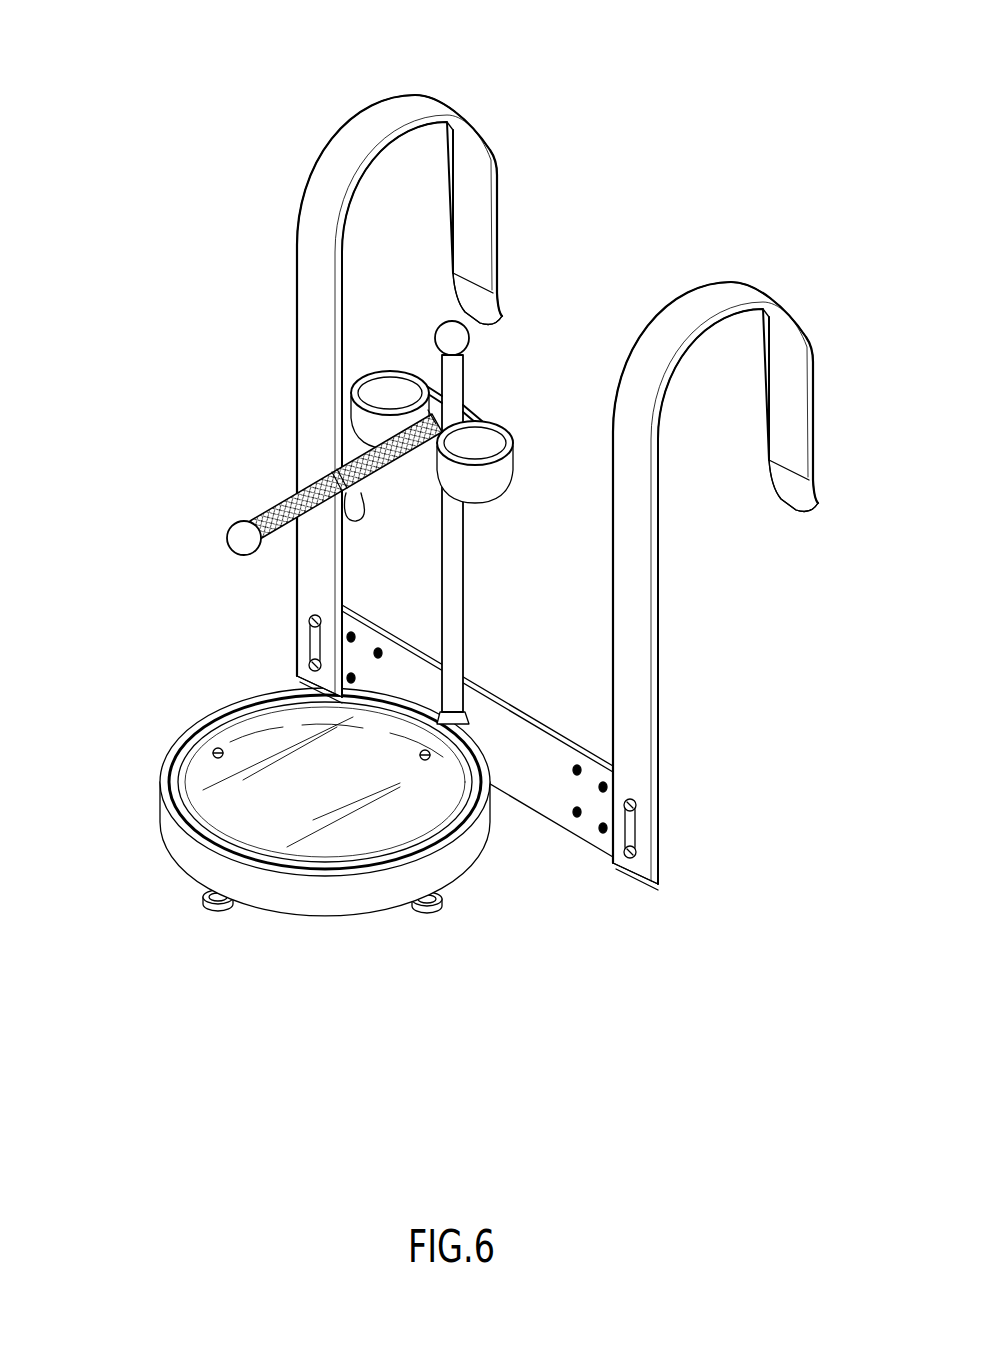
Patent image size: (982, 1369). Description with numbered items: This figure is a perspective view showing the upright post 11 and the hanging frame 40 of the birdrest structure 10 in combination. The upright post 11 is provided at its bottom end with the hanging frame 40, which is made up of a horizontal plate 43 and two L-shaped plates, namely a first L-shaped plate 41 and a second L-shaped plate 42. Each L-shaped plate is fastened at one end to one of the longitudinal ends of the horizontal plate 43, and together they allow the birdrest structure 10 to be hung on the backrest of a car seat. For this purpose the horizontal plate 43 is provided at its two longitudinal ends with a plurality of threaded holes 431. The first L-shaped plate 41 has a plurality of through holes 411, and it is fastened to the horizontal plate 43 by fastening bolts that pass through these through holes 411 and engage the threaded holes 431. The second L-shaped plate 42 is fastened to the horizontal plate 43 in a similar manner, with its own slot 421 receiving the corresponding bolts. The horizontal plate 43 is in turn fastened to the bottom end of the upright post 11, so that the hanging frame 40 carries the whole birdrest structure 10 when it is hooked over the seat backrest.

The birdrest structure 10 is at (163, 610).
The upright post 11 is at (453, 566).
The hanging frame 40 is at (597, 203).
The first L-shaped plate 41 is at (397, 110).
The through holes 411 is at (313, 645).
The second L-shaped plate 42 is at (737, 293).
The slot of second hook 421 is at (633, 832).
The horizontal plate 43 is at (520, 747).
The threaded holes 431 is at (378, 651).